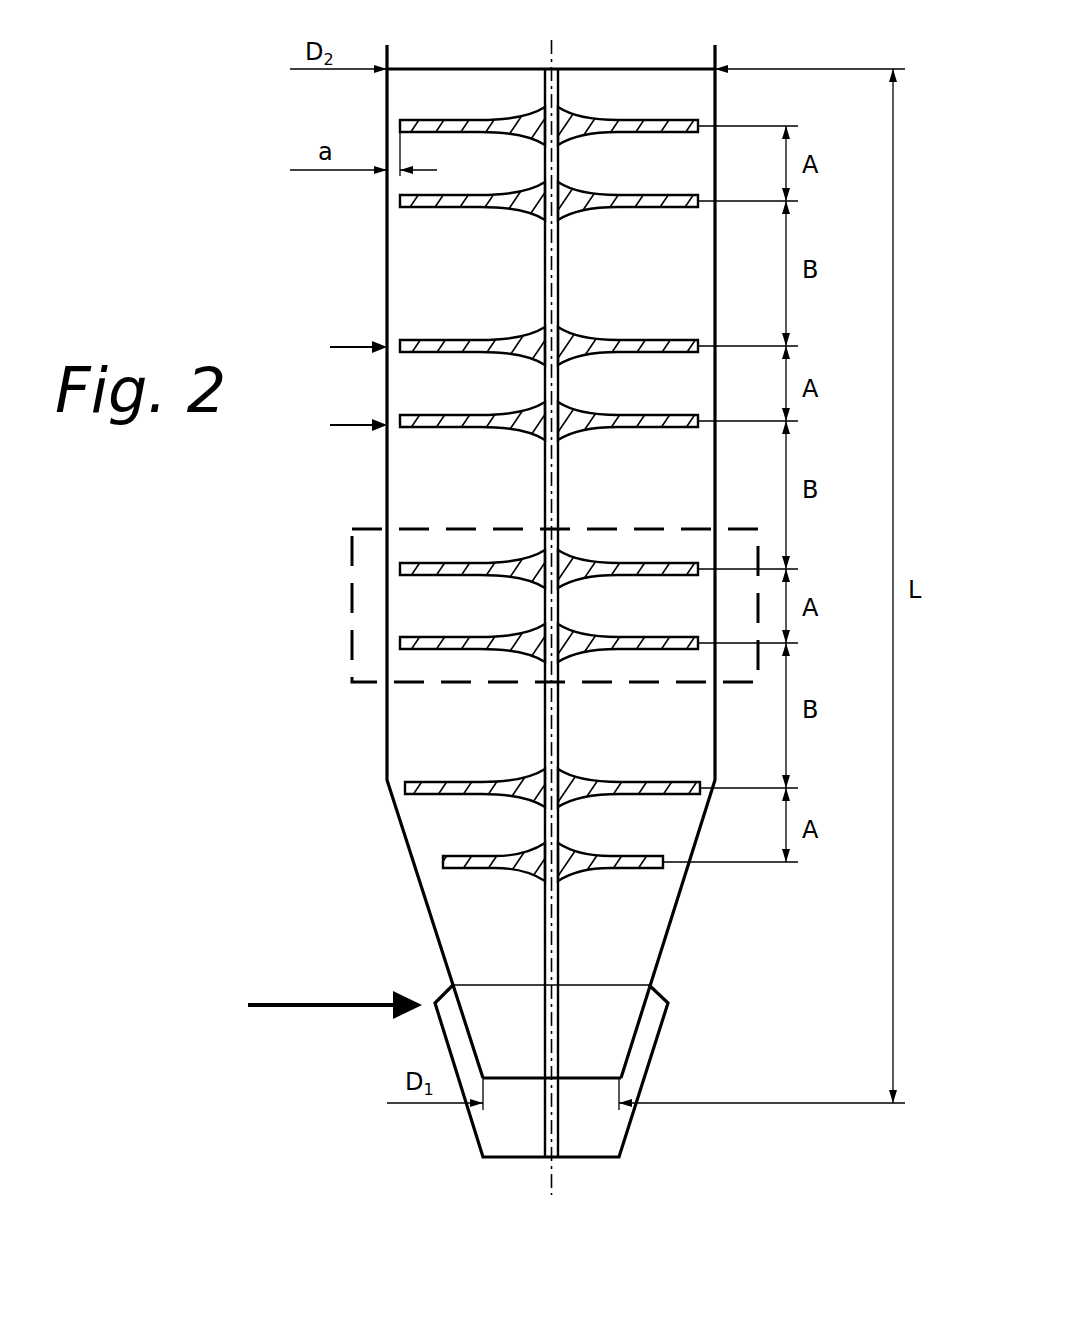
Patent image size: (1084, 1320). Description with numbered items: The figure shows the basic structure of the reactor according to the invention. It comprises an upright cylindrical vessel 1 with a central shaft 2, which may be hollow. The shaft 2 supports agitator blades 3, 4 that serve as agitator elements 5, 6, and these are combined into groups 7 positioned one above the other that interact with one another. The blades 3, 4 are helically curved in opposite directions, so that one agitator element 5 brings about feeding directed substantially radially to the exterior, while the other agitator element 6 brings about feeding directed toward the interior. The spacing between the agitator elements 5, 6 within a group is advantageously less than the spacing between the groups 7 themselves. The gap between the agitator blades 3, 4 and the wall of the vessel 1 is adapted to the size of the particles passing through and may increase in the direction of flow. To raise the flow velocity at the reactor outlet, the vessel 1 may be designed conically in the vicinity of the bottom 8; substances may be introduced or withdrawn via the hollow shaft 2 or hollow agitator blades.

The cylindrical vessel 1 is at (387, 268).
The central shaft 2 is at (562, 478).
The agitator blade 3 is at (606, 119).
The agitator blade 4 is at (604, 208).
The agitator element 5 is at (331, 346).
The agitator element 6 is at (335, 426).
The group 7 is at (352, 600).
The bottom 8 is at (628, 1130).